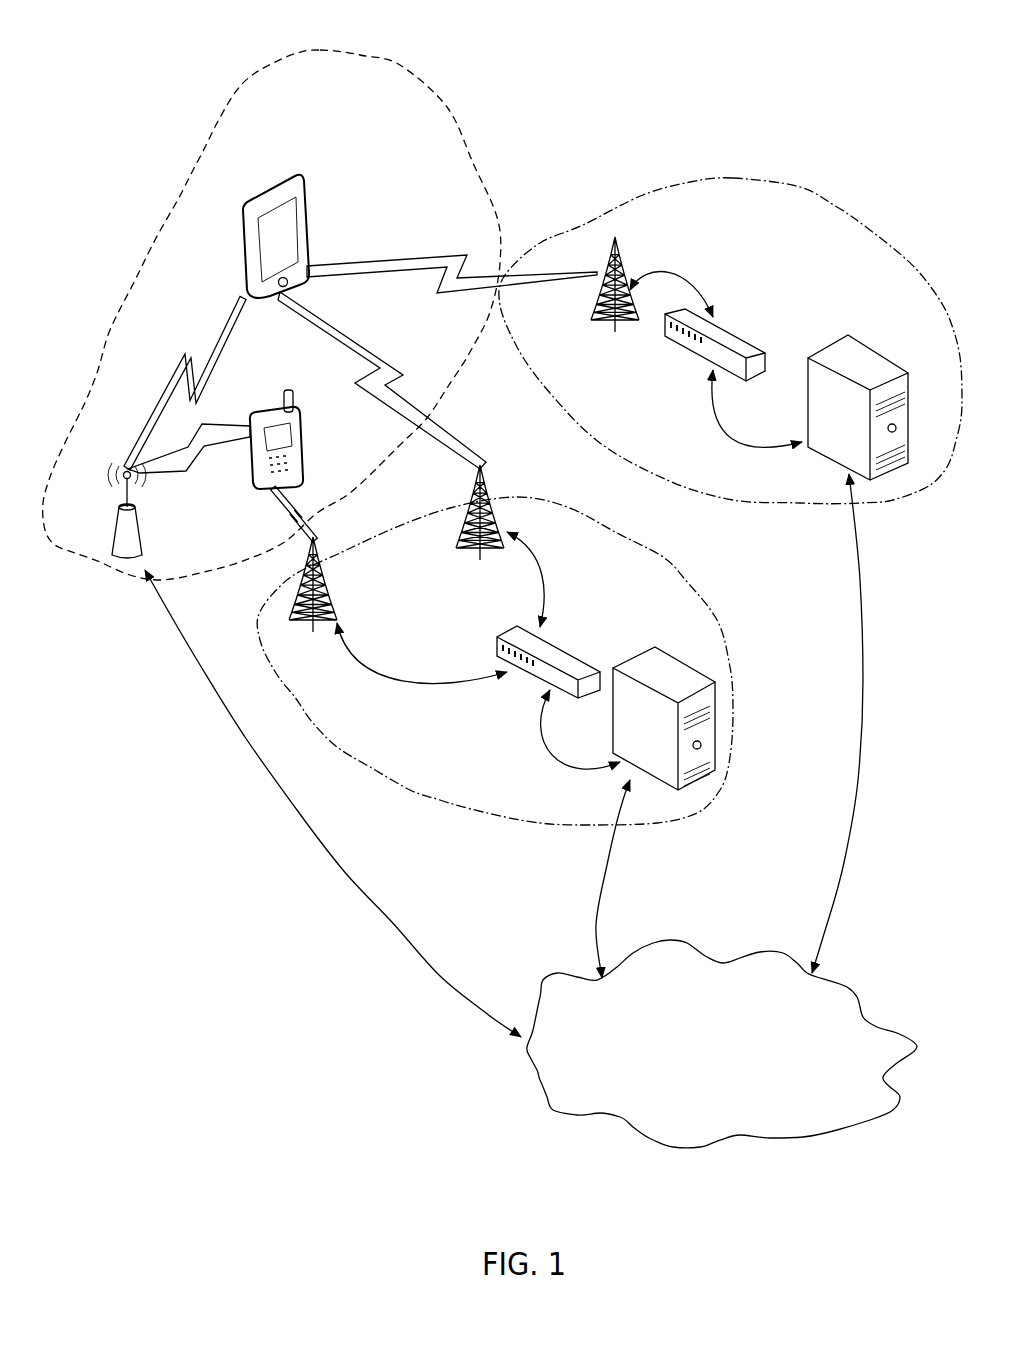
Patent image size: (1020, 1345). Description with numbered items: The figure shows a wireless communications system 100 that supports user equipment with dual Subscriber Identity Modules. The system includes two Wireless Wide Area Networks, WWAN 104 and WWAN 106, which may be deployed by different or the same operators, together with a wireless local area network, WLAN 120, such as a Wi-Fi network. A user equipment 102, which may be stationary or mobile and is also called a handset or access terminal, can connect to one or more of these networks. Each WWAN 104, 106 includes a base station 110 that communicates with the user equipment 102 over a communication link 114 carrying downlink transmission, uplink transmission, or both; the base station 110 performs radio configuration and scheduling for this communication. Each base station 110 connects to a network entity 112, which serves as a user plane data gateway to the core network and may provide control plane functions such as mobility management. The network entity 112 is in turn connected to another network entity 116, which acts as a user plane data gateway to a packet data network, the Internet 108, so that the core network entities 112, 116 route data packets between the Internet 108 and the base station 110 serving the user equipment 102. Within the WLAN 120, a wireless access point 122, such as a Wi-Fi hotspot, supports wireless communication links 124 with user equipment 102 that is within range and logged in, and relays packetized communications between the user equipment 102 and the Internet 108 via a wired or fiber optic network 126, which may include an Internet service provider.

The wireless communications system 100 is at (207, 955).
The user equipment 102 is at (281, 178).
The Wireless Wide Area Network 104 is at (737, 655).
The Wireless Wide Area Network 106 is at (840, 208).
The Internet 108 is at (728, 963).
The base station 110 is at (618, 250).
The network entity 112 is at (724, 320).
The communication link 114 is at (421, 256).
The network entity 116 is at (889, 355).
The wireless local area network 120 is at (447, 107).
The wireless access point 122 is at (141, 540).
The wireless communication link 124 is at (227, 327).
The wired network 126 is at (340, 865).